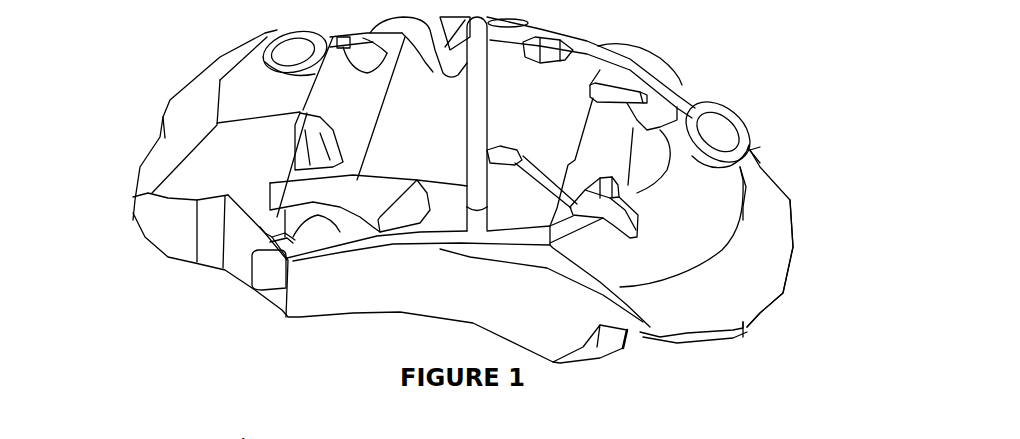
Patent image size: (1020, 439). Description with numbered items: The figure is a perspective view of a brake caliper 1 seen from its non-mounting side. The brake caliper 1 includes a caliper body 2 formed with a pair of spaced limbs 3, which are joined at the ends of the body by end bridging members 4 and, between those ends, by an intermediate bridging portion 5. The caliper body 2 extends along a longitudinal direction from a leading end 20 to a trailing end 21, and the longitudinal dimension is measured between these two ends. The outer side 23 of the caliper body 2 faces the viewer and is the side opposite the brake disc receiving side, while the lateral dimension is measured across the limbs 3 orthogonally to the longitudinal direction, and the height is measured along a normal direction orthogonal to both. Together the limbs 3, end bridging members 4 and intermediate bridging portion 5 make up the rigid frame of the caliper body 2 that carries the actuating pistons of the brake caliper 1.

The brake caliper 1 is at (120, 41).
The caliper body 2 is at (690, 100).
The limbs 3 is at (580, 42).
The end bridging members 4 is at (182, 241).
The intermediate bridging portion 5 is at (443, 137).
The leading end 20 is at (120, 170).
The trailing end 21 is at (815, 334).
The outer side 23 is at (753, 106).